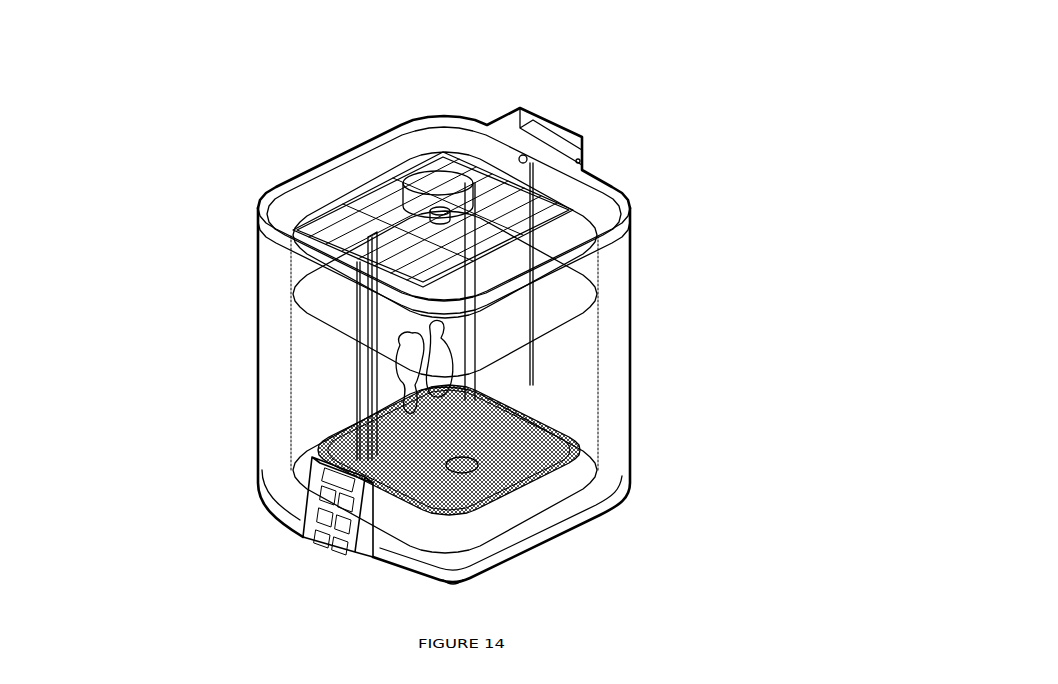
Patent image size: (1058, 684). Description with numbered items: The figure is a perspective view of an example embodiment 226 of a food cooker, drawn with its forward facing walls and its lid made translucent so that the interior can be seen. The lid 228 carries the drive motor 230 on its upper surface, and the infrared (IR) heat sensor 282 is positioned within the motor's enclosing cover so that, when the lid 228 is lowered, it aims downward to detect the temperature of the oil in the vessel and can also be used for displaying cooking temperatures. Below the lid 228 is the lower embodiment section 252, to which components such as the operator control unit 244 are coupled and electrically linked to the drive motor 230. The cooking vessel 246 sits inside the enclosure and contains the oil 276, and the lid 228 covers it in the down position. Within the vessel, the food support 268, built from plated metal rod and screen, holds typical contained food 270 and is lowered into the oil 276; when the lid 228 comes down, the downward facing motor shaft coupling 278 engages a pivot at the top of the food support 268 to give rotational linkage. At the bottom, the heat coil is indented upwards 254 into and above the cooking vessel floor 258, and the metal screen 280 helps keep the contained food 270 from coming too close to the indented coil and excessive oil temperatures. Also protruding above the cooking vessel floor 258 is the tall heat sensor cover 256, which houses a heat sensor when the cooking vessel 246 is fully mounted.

The example embodiment 226 is at (672, 162).
The lid 228 is at (290, 183).
The drive motor 230 is at (420, 182).
The operator control unit 244 is at (327, 512).
The cooking vessel 246 is at (597, 367).
The lower embodiment section 252 is at (630, 416).
The indented upwards 254 is at (450, 523).
The heat sensor cover 256 is at (513, 490).
The cooking vessel floor 258 is at (433, 530).
The food support 268 is at (330, 413).
The typical contained food 270 is at (452, 362).
The oil 276 is at (320, 328).
The motor shaft coupling 278 is at (447, 208).
The metal screen 280 is at (435, 530).
The infrared (IR) heat sensor 282 is at (523, 158).